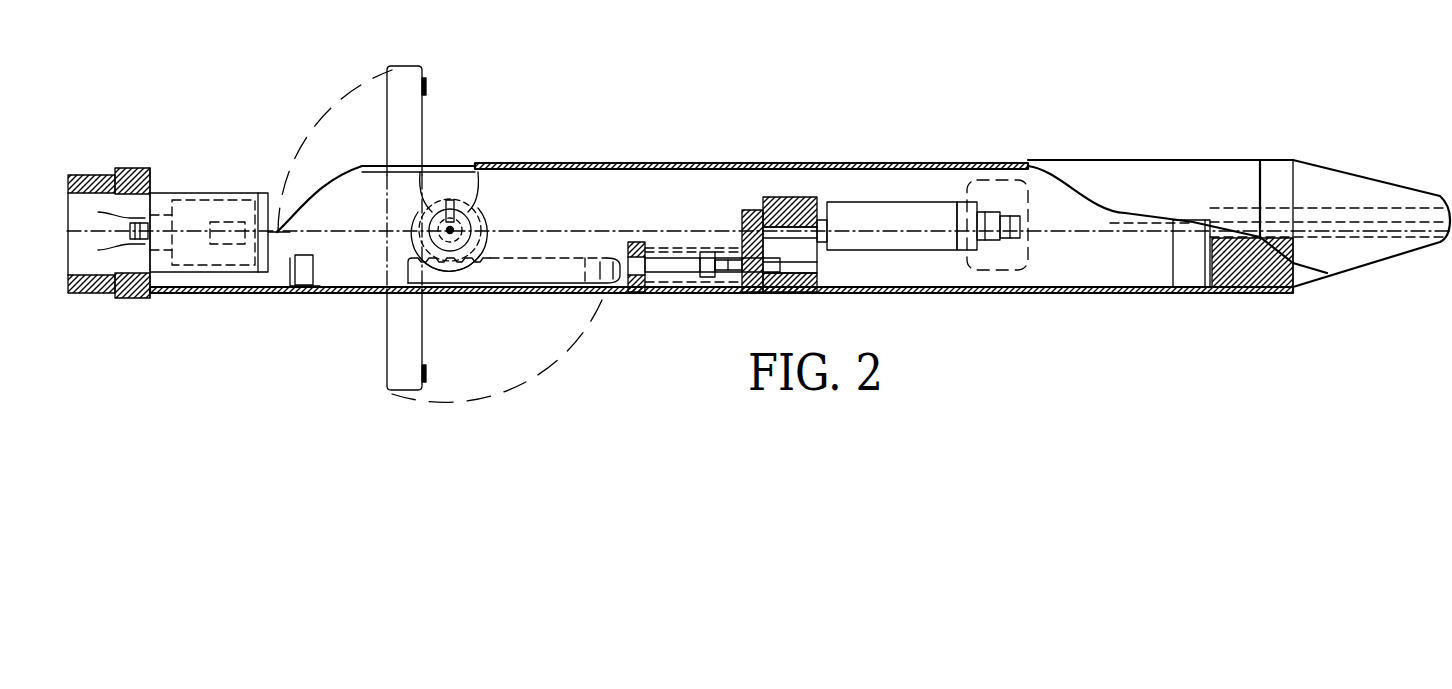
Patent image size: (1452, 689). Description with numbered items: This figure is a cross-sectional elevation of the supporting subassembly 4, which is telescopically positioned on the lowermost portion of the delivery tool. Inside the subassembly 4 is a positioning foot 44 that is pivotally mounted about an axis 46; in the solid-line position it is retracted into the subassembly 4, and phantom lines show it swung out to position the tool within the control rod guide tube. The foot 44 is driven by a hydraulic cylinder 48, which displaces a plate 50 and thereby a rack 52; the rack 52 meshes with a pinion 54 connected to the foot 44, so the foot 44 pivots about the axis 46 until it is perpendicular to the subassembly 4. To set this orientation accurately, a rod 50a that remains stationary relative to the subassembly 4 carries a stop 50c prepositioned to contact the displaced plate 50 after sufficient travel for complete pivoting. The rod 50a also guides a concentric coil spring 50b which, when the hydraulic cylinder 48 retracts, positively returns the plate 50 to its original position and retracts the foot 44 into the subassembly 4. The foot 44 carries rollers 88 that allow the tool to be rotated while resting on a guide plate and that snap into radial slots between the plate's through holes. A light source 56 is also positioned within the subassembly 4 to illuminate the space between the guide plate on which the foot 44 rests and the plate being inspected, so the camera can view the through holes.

The subassembly 4 is at (800, 142).
The positioning foot 44 is at (397, 69).
The axis 46 is at (452, 200).
The hydraulic cylinder 48 is at (885, 200).
The plate 50 is at (748, 292).
The rod 50a is at (688, 266).
The coil spring 50b is at (700, 252).
The stop 50c is at (712, 252).
The rack 52 is at (548, 267).
The pinion 54 is at (480, 208).
The light source 56 is at (220, 192).
The rollers 88 is at (428, 85).